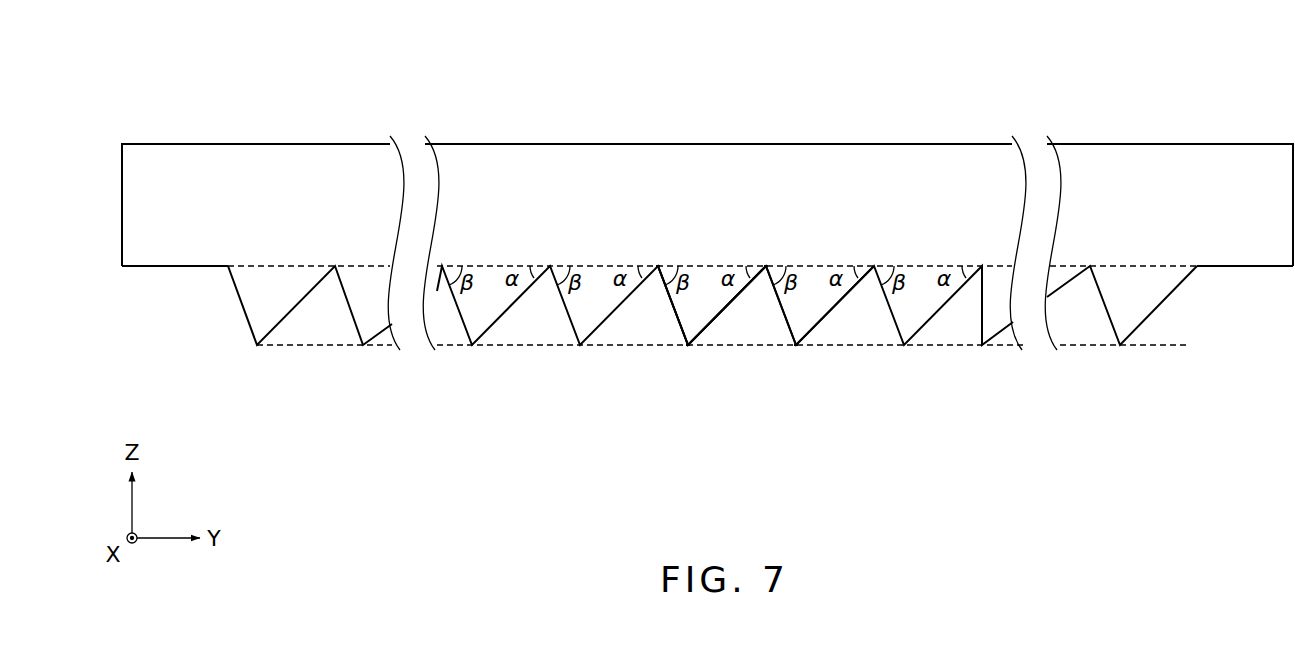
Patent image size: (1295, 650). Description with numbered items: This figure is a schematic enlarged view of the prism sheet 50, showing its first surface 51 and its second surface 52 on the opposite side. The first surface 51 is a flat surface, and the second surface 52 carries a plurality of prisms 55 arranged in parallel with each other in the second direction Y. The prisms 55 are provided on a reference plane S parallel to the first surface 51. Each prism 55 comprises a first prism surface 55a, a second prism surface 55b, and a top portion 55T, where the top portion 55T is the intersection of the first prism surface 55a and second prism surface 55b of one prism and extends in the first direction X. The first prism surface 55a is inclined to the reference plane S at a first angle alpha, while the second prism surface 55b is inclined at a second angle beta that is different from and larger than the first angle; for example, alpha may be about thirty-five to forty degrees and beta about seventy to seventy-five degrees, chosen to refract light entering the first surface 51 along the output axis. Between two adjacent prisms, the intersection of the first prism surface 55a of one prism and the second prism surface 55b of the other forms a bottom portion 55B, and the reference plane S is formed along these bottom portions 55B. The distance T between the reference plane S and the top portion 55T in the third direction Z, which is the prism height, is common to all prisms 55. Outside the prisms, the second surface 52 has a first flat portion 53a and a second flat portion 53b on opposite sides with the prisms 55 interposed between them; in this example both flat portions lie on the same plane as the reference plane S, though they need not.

The prism sheet 50 is at (836, 118).
The first surface 51 is at (715, 143).
The second surface 52 is at (560, 368).
The first flat portion 53a is at (178, 269).
The second flat portion 53b is at (1225, 270).
The prism 55 is at (789, 308).
The first prism surface 55a is at (707, 337).
The second prism surface 55b is at (679, 330).
The bottom portion 55B is at (656, 277).
The top portion 55T is at (686, 349).
The reference plane S is at (824, 264).
The distance T is at (1153, 268).